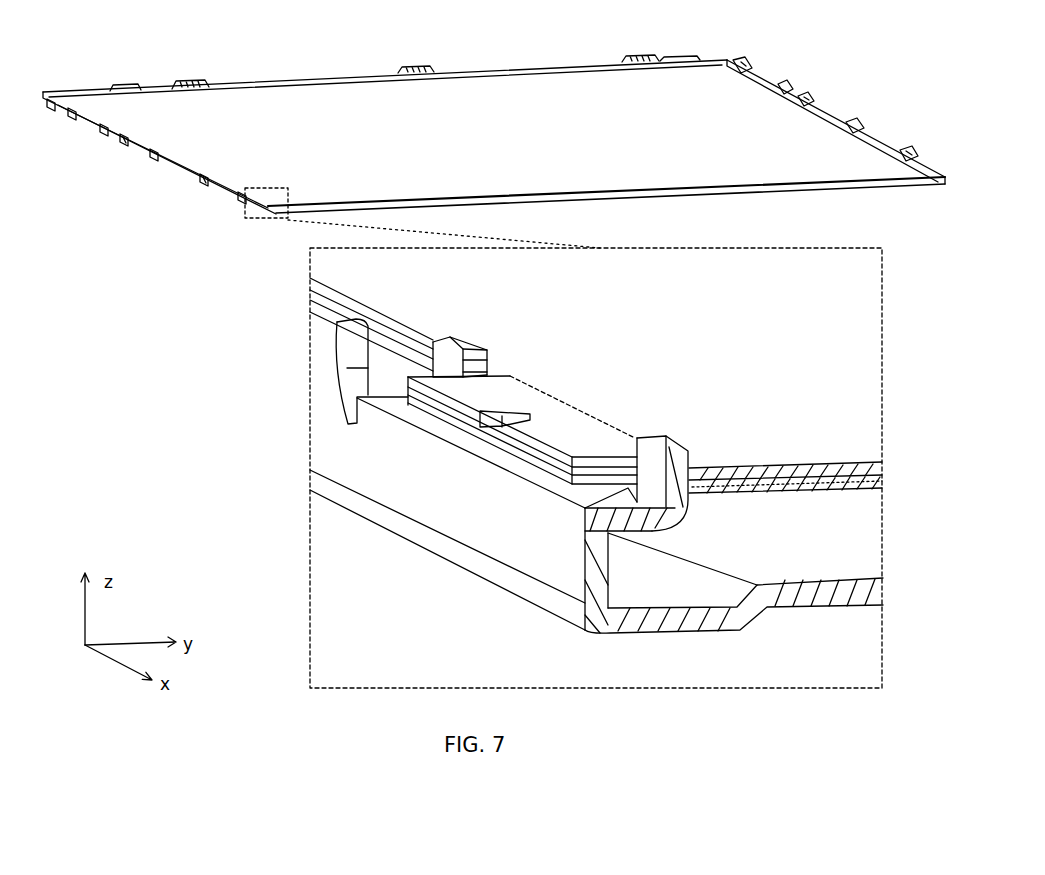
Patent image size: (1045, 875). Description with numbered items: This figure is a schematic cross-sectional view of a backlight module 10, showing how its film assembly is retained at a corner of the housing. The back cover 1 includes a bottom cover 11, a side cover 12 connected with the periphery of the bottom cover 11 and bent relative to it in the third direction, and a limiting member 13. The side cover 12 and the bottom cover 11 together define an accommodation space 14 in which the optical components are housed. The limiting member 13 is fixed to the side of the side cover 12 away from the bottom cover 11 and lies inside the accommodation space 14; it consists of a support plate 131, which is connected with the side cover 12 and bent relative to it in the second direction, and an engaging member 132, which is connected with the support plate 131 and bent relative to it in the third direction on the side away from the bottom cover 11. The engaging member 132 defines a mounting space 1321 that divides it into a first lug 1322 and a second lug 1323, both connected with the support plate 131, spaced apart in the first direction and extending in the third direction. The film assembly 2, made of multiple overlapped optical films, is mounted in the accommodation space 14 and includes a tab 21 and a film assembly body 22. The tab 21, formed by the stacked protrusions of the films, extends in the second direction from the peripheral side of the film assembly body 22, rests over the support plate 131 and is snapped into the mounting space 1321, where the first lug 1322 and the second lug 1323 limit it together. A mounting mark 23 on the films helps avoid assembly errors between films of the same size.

The backlight module 10 is at (55, 48).
The back cover 1 is at (615, 558).
The bottom cover 11 is at (787, 605).
The side cover 12 is at (530, 550).
The limiting member 13 is at (408, 418).
The accommodation space 14 is at (828, 548).
The support plate 131 is at (450, 438).
The engaging member 132 is at (408, 428).
The mounting space 1321 is at (622, 489).
The first lug 1322 is at (662, 440).
The second lug 1323 is at (463, 345).
The film assembly 2 is at (656, 434).
The tab 21 is at (590, 462).
The film assembly body 22 is at (787, 468).
The mounting mark 23 is at (510, 410).